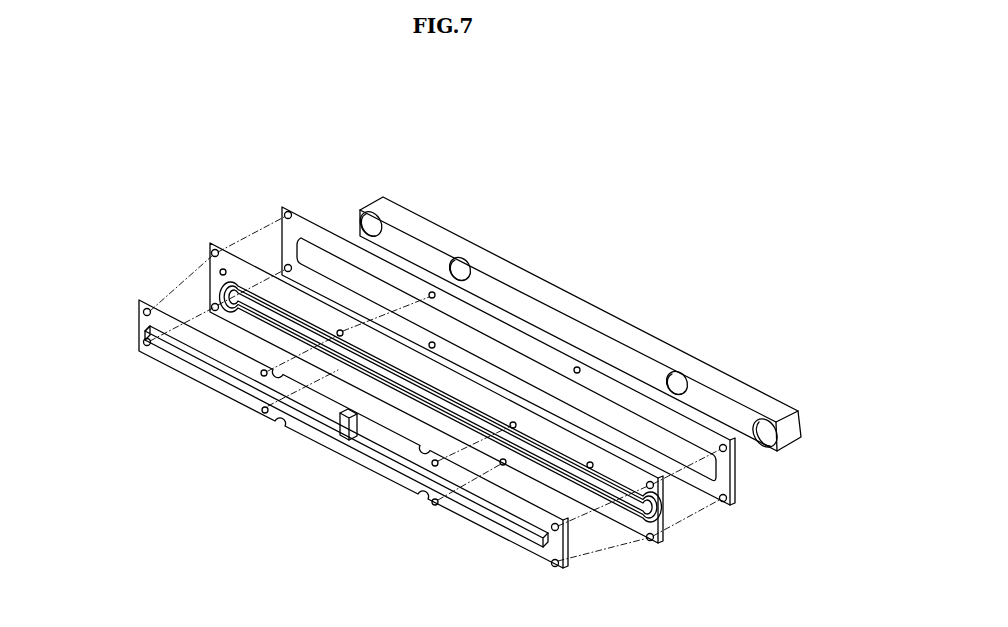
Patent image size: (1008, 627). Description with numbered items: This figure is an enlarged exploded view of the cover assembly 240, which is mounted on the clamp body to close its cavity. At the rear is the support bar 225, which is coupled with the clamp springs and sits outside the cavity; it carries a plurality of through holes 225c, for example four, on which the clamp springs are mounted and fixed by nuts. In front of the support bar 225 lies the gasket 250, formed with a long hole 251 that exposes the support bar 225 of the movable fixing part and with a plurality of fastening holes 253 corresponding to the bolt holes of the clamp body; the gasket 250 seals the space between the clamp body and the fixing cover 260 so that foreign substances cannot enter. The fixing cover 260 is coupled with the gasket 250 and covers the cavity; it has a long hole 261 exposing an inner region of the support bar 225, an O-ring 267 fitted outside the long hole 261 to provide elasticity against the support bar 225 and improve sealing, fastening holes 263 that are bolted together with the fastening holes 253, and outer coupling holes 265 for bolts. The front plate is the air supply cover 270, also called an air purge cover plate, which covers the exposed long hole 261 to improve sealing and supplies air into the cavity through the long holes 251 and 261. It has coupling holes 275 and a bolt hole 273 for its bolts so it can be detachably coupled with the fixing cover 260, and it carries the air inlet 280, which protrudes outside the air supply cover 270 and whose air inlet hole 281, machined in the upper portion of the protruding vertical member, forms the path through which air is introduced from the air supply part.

The cover assembly 240 is at (178, 161).
The support bar 225 is at (578, 299).
The through hole 225c is at (360, 220).
The gasket 250 is at (735, 477).
The long hole 251 is at (285, 250).
The fastening hole 253 is at (281, 228).
The fixing cover 260 is at (663, 528).
The long hole 261 is at (614, 512).
The fastening hole 263 is at (211, 256).
The coupling hole 265 is at (219, 272).
The O-ring 267 is at (606, 510).
The air supply cover 270 is at (539, 556).
The bolt hole 273 is at (275, 424).
The coupling hole 275 is at (141, 313).
The air inlet 280 is at (360, 452).
The air inlet hole 281 is at (338, 423).